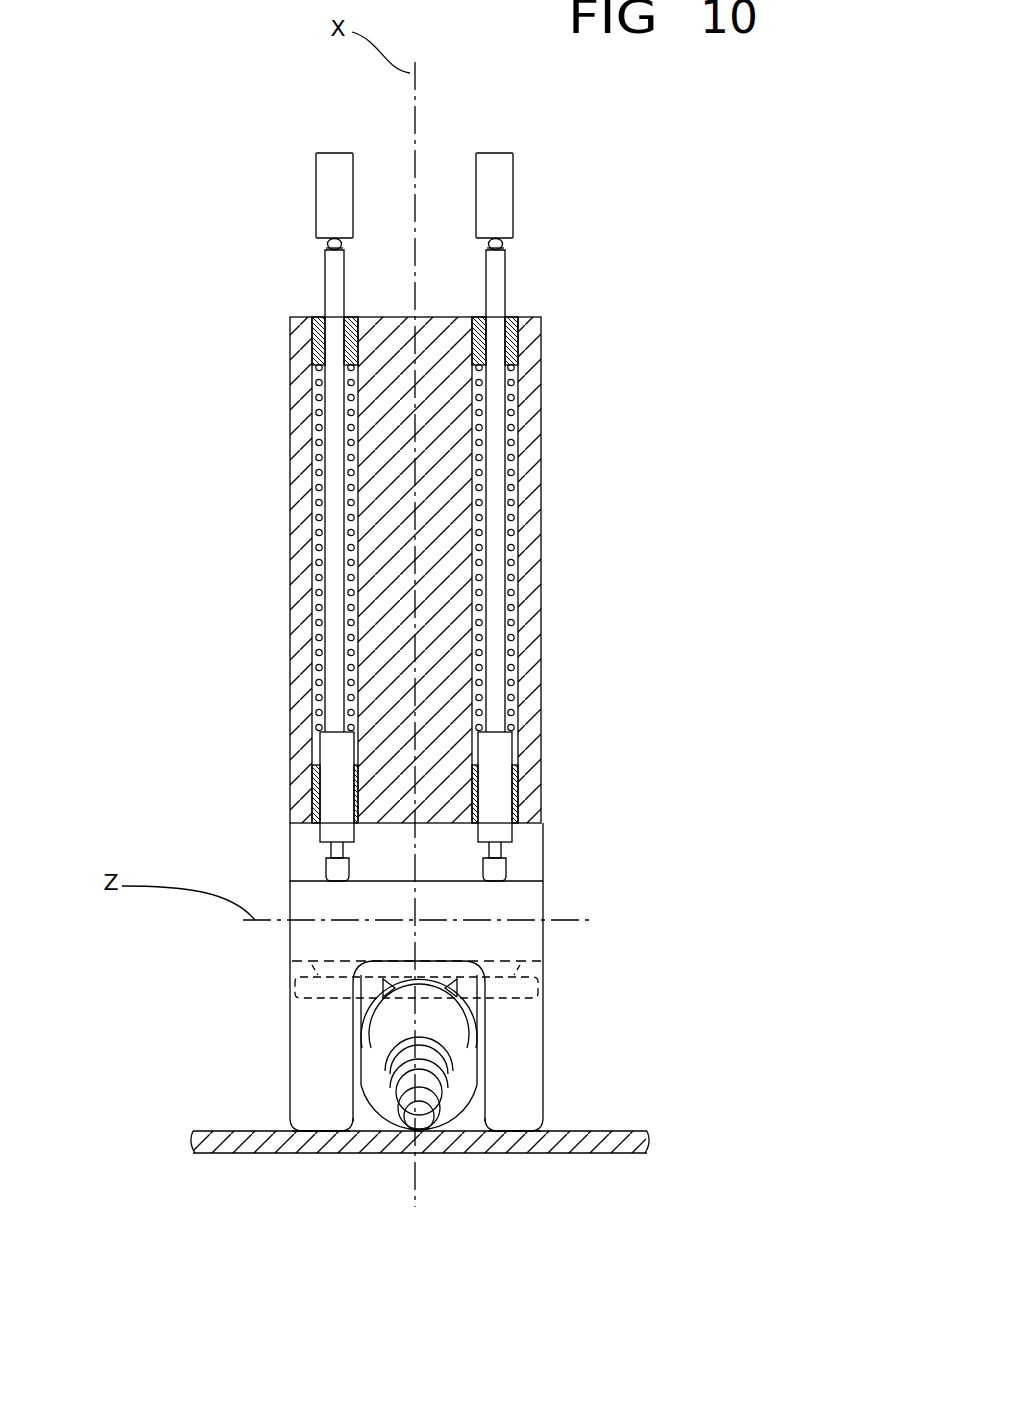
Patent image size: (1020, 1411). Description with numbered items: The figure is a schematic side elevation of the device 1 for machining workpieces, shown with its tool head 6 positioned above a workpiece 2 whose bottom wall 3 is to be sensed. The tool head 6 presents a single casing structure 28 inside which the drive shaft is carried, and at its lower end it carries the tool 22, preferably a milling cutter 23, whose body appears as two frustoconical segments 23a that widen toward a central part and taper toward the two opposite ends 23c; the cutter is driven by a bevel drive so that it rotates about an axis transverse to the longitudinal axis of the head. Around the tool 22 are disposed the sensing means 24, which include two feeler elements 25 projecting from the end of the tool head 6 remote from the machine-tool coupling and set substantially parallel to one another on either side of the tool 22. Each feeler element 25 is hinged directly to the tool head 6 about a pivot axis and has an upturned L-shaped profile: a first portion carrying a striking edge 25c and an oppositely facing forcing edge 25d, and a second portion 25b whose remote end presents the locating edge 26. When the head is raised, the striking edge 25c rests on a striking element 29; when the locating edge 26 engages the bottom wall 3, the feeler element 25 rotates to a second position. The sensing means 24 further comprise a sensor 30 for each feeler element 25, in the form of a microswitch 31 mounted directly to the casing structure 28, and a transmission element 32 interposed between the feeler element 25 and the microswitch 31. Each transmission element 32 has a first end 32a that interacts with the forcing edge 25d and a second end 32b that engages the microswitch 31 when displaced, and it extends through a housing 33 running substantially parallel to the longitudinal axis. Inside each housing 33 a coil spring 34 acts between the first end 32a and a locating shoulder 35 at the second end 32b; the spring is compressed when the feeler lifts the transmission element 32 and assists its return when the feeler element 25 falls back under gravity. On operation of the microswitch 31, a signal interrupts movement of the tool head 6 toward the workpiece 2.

The device for machining workpieces 1 is at (716, 431).
The workpiece 2 is at (623, 1158).
The bottom wall 3 is at (222, 1143).
The tool head 6 is at (543, 390).
The tool 22 is at (465, 1113).
The milling cutter 23 is at (408, 1112).
The frustoconical segments 23a is at (398, 1104).
The opposite ends 23c is at (428, 1128).
The sensing means 24 is at (526, 190).
The feeler element 25 is at (290, 1030).
The second portion 25b is at (311, 1076).
The striking edge 25c is at (292, 970).
The forcing edge 25d is at (543, 862).
The locating edge 26 is at (300, 1131).
The casing structure 28 is at (541, 515).
The striking element 29 is at (292, 985).
The sensor 30 is at (334, 150).
The microswitch 31 is at (328, 175).
The transmission element 32 is at (319, 750).
The first end 32a is at (336, 872).
The second end 32b is at (335, 282).
The housing 33 is at (323, 482).
The coil spring 34 is at (316, 447).
The locating shoulder 35 is at (318, 340).